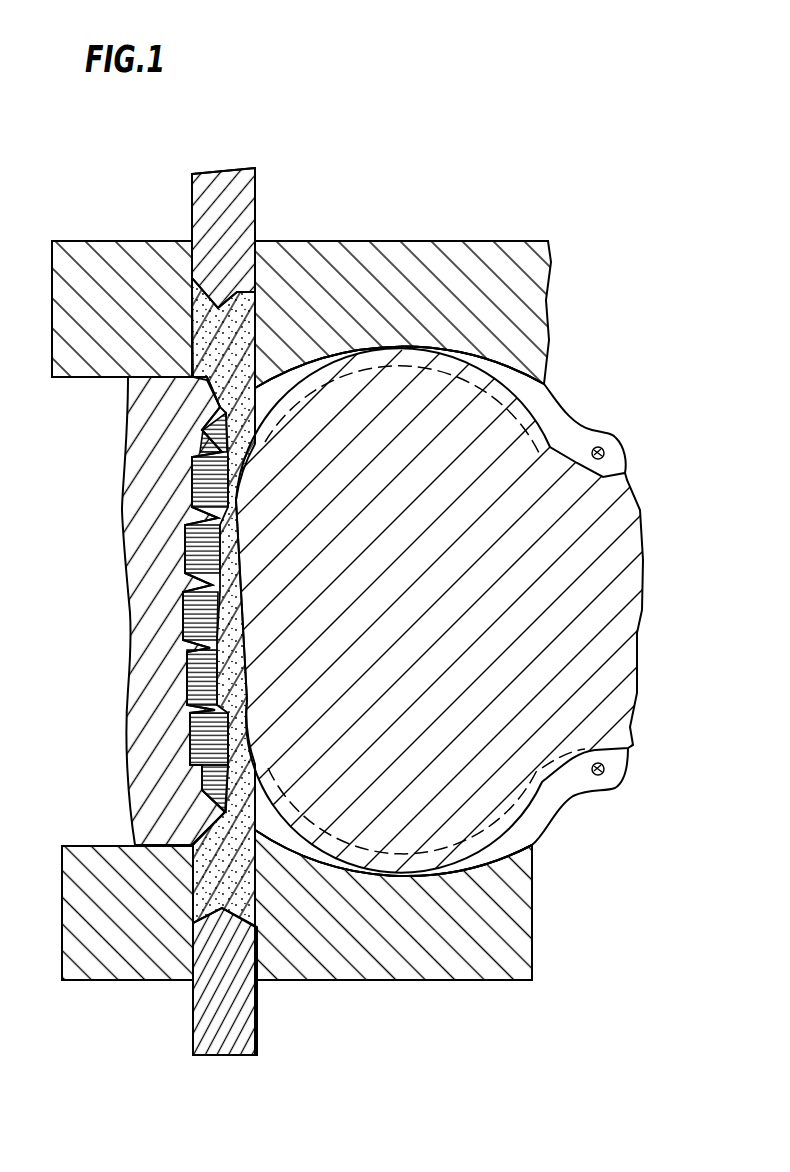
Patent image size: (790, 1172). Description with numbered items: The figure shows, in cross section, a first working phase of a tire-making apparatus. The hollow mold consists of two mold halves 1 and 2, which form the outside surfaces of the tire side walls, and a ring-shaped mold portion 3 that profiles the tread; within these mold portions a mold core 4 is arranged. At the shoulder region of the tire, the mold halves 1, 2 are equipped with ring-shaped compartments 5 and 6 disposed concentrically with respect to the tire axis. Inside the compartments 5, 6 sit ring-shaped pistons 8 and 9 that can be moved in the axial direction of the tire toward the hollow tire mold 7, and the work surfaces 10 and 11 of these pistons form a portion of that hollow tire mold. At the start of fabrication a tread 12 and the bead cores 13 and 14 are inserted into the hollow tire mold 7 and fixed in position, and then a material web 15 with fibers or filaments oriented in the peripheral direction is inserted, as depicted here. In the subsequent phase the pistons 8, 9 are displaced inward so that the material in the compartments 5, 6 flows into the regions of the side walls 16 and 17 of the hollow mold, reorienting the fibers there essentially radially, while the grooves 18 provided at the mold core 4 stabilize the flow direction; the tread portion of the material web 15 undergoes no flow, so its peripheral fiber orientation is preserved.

The mold half 1 is at (90, 893).
The mold half 2 is at (77, 310).
The ring-shaped mold portion 3 is at (140, 635).
The mold core 4 is at (618, 638).
The ring-shaped compartment 5 is at (255, 902).
The ring-shaped compartment 6 is at (256, 312).
The hollow tire mold 7 is at (533, 402).
The ring-shaped piston 8 is at (207, 1017).
The ring-shaped piston 9 is at (212, 210).
The work surface 10 is at (193, 918).
The work surface 11 is at (197, 312).
The tread 12 is at (183, 545).
The bead core 13 is at (600, 777).
The bead core 14 is at (602, 448).
The material web 15 is at (187, 680).
The side wall 16 is at (420, 872).
The side wall 17 is at (463, 360).
The grooves 18 is at (498, 403).